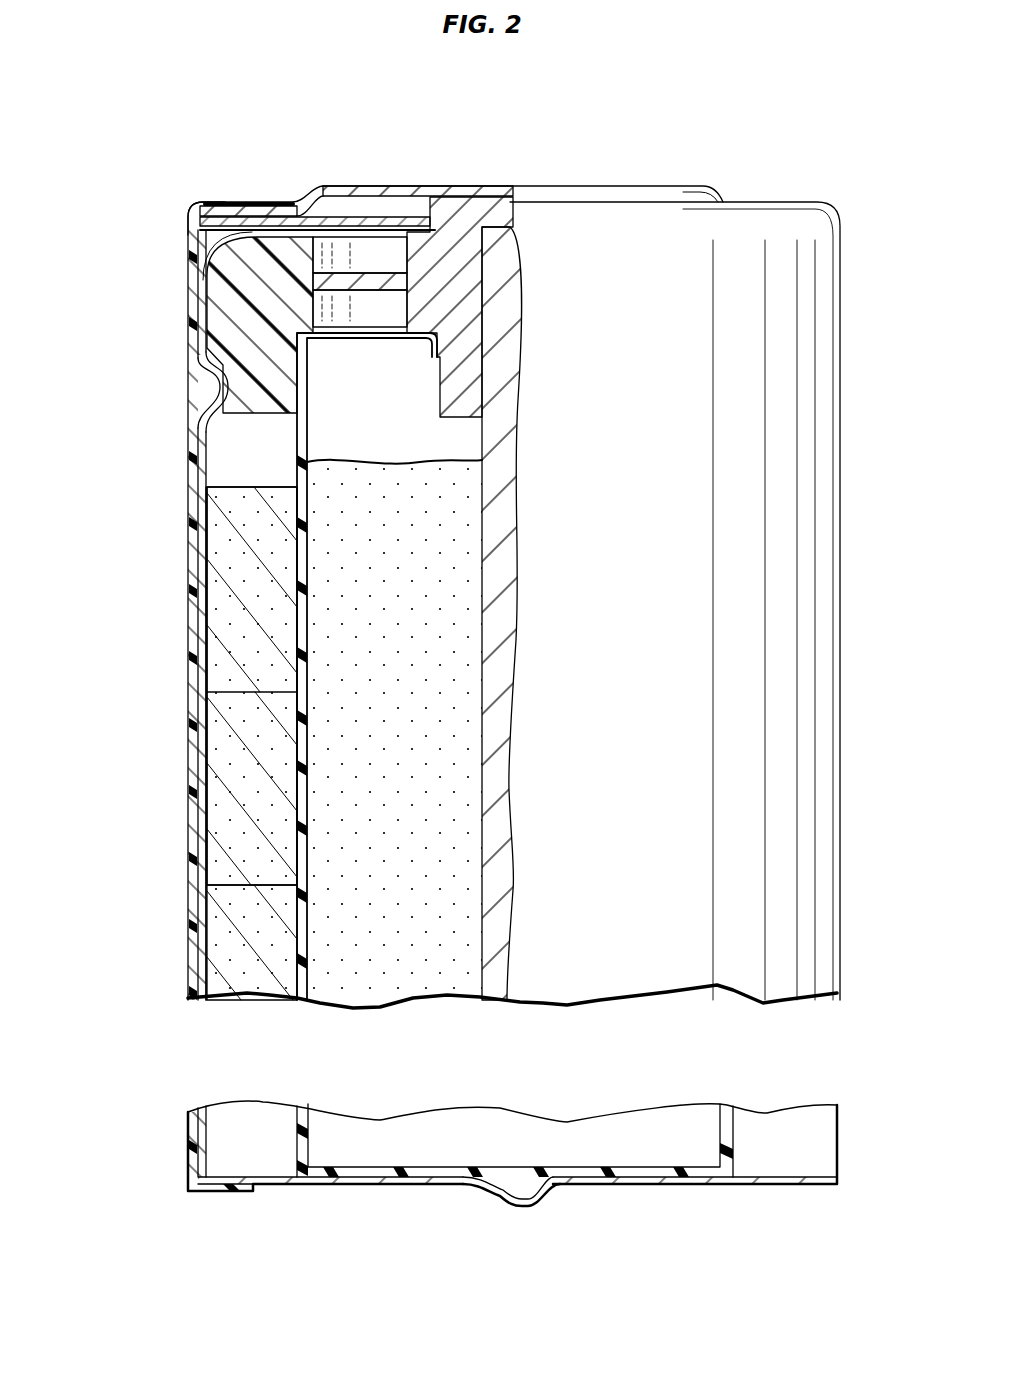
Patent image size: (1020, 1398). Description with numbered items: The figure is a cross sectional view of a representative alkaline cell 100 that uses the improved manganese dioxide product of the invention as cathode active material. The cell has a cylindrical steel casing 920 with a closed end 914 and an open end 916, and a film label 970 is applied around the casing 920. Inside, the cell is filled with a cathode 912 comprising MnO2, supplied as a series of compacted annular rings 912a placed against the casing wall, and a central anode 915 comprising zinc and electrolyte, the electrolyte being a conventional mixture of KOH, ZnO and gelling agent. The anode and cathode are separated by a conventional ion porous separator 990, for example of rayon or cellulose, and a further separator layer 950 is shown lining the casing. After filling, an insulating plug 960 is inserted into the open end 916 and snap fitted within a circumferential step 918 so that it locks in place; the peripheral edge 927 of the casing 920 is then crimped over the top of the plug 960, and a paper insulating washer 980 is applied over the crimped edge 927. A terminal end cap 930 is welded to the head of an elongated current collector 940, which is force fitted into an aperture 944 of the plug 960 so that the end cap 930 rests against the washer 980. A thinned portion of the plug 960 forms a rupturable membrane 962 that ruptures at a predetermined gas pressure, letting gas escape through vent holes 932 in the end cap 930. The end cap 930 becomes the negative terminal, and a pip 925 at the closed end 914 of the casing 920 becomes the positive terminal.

The alkaline cell 100 is at (158, 348).
The cathode 912 is at (228, 620).
The compacted annular rings 912a is at (223, 672).
The closed end 914 is at (353, 1188).
The anode 915 is at (443, 970).
The open end 916 is at (297, 200).
The circumferential step 918 is at (228, 378).
The cylindrical steel casing 920 is at (203, 572).
The pip 925 is at (527, 1207).
The peripheral edge 927 is at (247, 226).
The terminal end cap 930 is at (380, 186).
The vent holes 932 is at (306, 215).
The current collector 940 is at (470, 205).
The aperture 944 is at (490, 250).
The separator 950 is at (203, 513).
The insulating plug 960 is at (263, 247).
The rupturable membrane 962 is at (365, 284).
The film label 970 is at (188, 290).
The paper insulating washer 980 is at (190, 233).
The ion porous separator 990 is at (303, 967).